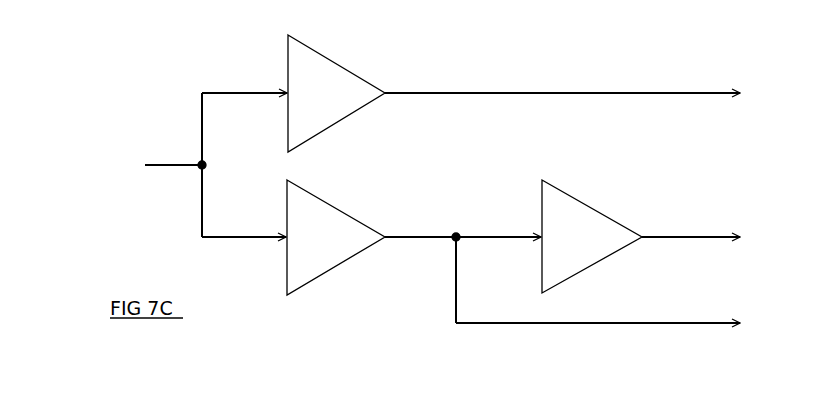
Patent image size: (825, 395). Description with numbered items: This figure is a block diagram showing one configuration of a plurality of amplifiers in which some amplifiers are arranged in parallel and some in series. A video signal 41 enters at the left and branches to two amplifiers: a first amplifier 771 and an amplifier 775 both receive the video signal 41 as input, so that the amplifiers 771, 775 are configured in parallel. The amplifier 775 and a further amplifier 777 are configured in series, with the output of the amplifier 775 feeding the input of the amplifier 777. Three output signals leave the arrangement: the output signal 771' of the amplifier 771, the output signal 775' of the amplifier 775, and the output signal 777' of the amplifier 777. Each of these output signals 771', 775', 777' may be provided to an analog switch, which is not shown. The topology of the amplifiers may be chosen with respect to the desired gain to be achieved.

The video signal 41 is at (165, 165).
The first amplifier 771 is at (336, 80).
The output signal 771' is at (562, 64).
The amplifier 775 is at (336, 249).
The output signal 775' is at (598, 292).
The amplifier 777 is at (592, 218).
The output signal 777' is at (691, 209).